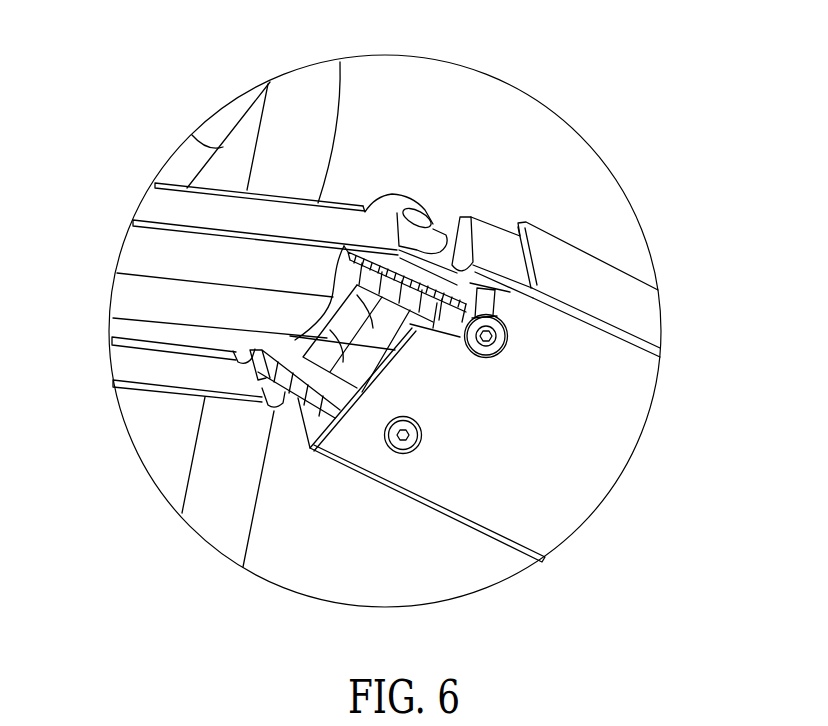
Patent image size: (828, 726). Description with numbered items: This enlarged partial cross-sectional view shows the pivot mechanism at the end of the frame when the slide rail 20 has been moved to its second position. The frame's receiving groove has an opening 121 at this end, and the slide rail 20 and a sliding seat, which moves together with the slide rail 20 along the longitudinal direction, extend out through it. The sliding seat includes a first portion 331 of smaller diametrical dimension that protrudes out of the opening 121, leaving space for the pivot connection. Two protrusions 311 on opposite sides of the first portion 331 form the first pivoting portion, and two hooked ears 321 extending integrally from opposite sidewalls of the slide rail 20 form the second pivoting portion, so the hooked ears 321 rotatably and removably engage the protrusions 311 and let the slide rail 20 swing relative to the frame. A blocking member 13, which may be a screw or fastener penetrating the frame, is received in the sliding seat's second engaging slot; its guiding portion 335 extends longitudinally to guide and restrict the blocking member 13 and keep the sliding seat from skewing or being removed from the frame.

The slide rail 20 is at (178, 207).
The protrusions 311 is at (420, 213).
The hooked ears 321 is at (430, 242).
The blocking member 13 is at (502, 346).
The guiding portion 335 is at (443, 333).
The first portion 331 is at (272, 390).
The opening 121 is at (317, 430).